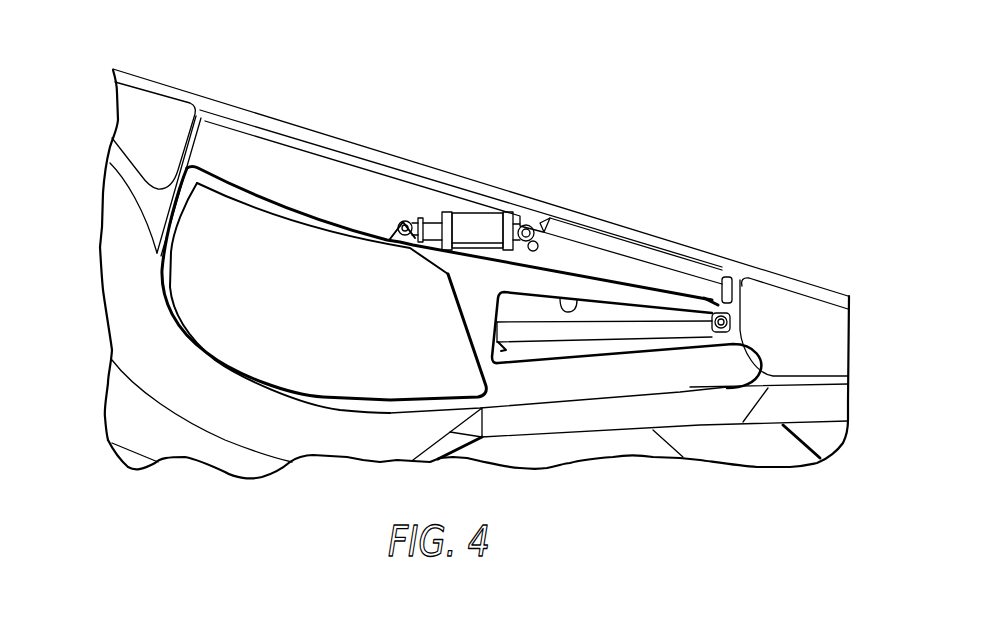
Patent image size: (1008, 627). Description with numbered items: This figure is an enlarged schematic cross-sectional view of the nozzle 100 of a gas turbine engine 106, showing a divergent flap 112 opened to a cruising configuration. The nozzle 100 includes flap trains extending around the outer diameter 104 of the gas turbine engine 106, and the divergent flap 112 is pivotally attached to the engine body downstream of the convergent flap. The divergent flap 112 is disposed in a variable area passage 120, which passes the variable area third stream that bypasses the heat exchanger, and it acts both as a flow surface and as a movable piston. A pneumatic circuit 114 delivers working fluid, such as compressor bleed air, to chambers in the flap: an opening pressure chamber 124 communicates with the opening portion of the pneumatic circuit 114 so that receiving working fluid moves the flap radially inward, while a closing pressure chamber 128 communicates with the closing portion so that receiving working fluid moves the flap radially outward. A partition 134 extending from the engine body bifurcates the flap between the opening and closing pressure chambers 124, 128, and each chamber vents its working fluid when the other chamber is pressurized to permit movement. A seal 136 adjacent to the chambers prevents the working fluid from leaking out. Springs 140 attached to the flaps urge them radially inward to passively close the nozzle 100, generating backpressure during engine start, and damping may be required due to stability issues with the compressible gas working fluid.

The nozzle 100 is at (632, 125).
The outer diameter 104 is at (284, 121).
The gas turbine engine 106 is at (124, 68).
The divergent flap 112 is at (324, 212).
The pneumatic circuit 114 is at (745, 283).
The variable area passage 120 is at (172, 350).
The opening pressure chamber 124 is at (721, 306).
The closing pressure chamber 128 is at (579, 301).
The partition 134 is at (645, 321).
The seal 136 is at (713, 312).
The spring 140 is at (467, 216).